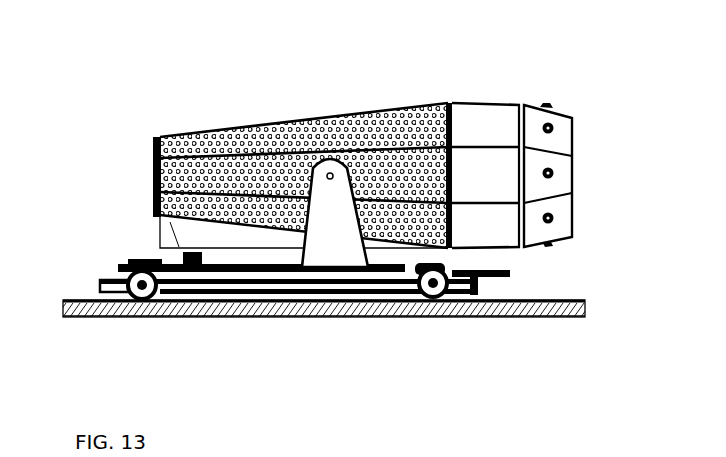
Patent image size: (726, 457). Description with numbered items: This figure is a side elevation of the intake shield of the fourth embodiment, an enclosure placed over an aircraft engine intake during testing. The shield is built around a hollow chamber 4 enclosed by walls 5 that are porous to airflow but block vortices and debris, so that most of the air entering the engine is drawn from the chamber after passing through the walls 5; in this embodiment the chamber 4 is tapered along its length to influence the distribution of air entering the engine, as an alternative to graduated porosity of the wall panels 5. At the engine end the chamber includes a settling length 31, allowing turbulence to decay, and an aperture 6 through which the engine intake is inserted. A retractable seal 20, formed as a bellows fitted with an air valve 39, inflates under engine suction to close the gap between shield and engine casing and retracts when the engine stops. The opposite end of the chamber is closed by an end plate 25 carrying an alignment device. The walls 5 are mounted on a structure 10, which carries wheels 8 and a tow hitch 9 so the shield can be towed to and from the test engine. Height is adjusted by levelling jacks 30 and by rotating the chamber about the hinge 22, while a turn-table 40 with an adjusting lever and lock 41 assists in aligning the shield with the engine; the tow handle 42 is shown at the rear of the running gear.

The hollow chamber 4 is at (429, 104).
The walls 5 is at (292, 126).
The aperture 6 is at (580, 163).
The wheels 8 is at (126, 258).
The tow hitch 9 is at (108, 277).
The structure 10 is at (377, 305).
The retractable seal 20 is at (560, 140).
The hinge 22 is at (304, 158).
The end plate 25 is at (153, 137).
The levelling jacks 30 is at (155, 215).
The settling length 31 is at (484, 117).
The air valve 39 is at (548, 106).
The turn-table 40 is at (250, 308).
The adjusting lever and lock 41 is at (185, 318).
The tow handle 42 is at (492, 284).